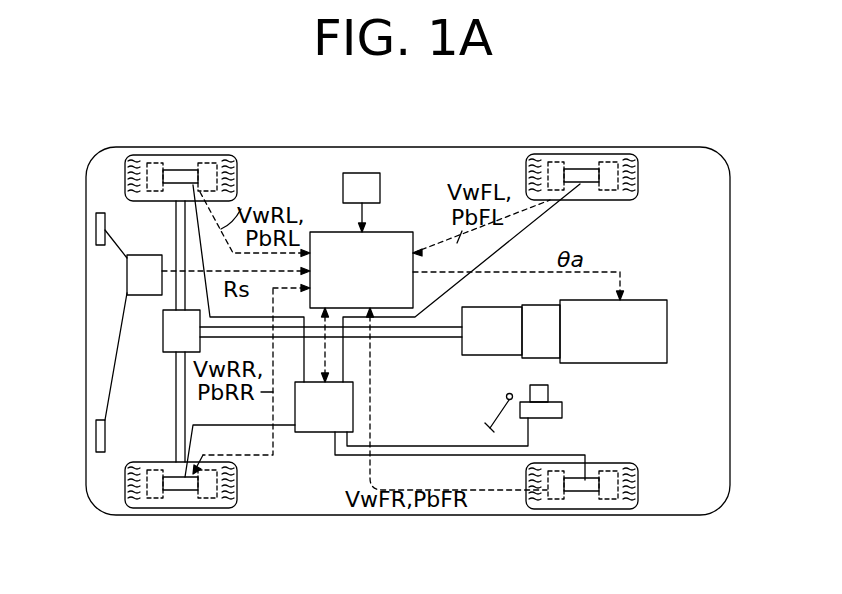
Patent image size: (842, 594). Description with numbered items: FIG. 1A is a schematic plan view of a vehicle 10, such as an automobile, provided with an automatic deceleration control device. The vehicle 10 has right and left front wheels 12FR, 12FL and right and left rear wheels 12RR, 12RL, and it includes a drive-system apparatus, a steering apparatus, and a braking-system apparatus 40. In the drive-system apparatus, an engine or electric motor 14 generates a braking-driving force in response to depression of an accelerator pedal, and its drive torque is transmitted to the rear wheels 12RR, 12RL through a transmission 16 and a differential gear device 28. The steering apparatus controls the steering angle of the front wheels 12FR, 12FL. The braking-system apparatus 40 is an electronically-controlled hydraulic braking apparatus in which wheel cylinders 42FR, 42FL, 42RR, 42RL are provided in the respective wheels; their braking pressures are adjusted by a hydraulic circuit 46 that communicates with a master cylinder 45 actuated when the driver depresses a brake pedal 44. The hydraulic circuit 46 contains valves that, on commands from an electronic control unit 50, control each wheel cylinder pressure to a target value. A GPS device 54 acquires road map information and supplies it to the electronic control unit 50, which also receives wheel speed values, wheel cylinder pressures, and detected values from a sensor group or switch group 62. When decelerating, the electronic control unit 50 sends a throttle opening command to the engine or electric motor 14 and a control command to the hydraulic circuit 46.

The vehicle 10 is at (427, 142).
The left rear wheel 12RL is at (125, 173).
The left front wheel 12FL is at (618, 153).
The right rear wheel 12RR is at (125, 489).
The right front wheel 12FR is at (632, 507).
The wheel cylinder 42RL is at (190, 170).
The wheel cylinder 42FL is at (579, 169).
The wheel cylinder 42RR is at (183, 490).
The wheel cylinder 42FR is at (582, 492).
The engine or electric motor 14 is at (600, 342).
The transmission 16 is at (479, 341).
The differential gear device 28 is at (169, 344).
The braking-system apparatus 40 is at (319, 441).
The brake pedal 44 is at (489, 427).
The master cylinder 45 is at (545, 418).
The hydraulic circuit 46 is at (311, 416).
The electronic control unit 50 is at (349, 282).
The GPS device 54 is at (132, 286).
The sensor group or switch group 62 is at (381, 186).